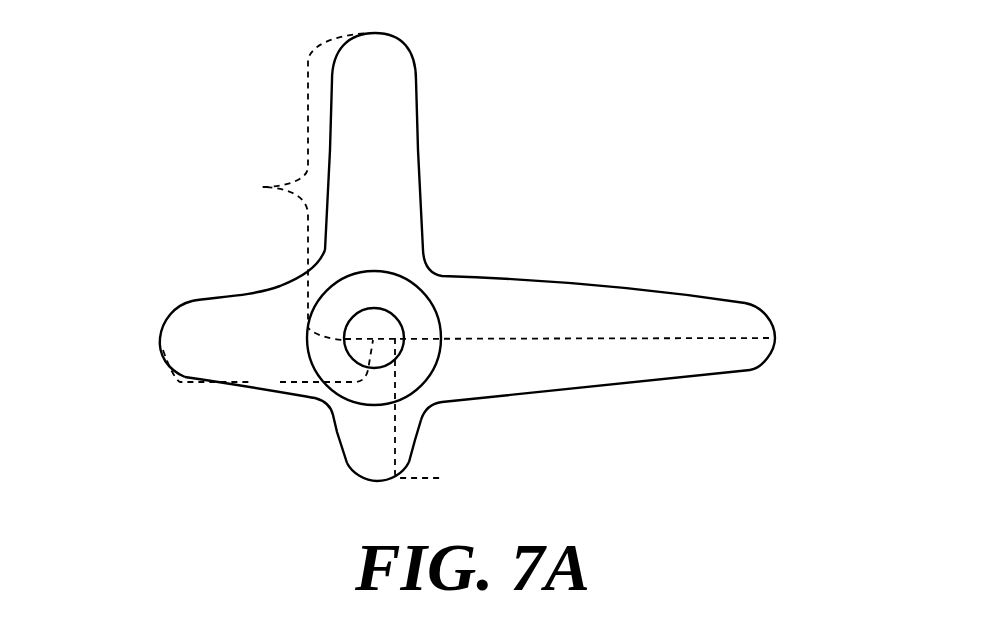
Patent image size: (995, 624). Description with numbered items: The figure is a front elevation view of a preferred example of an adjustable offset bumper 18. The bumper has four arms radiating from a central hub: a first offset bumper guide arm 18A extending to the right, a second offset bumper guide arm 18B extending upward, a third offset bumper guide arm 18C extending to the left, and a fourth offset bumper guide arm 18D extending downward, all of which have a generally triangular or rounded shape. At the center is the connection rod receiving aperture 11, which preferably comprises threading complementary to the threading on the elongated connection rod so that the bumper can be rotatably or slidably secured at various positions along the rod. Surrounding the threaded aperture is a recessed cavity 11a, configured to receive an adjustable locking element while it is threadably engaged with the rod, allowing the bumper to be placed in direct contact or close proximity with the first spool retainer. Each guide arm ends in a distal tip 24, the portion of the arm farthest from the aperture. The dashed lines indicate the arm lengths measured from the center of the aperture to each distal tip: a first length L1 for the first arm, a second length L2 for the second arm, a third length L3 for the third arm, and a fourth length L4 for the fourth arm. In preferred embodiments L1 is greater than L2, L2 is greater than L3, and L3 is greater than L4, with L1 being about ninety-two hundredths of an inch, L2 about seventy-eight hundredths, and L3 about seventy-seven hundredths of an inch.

The adjustable offset bumper 18 is at (73, 93).
The first offset bumper guide arm 18A is at (613, 254).
The second offset bumper guide arm 18B is at (298, 127).
The third offset bumper guide arm 18C is at (126, 333).
The fourth offset bumper guide arm 18D is at (303, 465).
The distal tip 24 is at (385, 33).
The connection rod receiving aperture 11 is at (374, 338).
The recessed cavity 11a is at (415, 333).
The first length L1 is at (559, 325).
The second length L2 is at (262, 187).
The third length L3 is at (261, 387).
The fourth length L4 is at (397, 404).